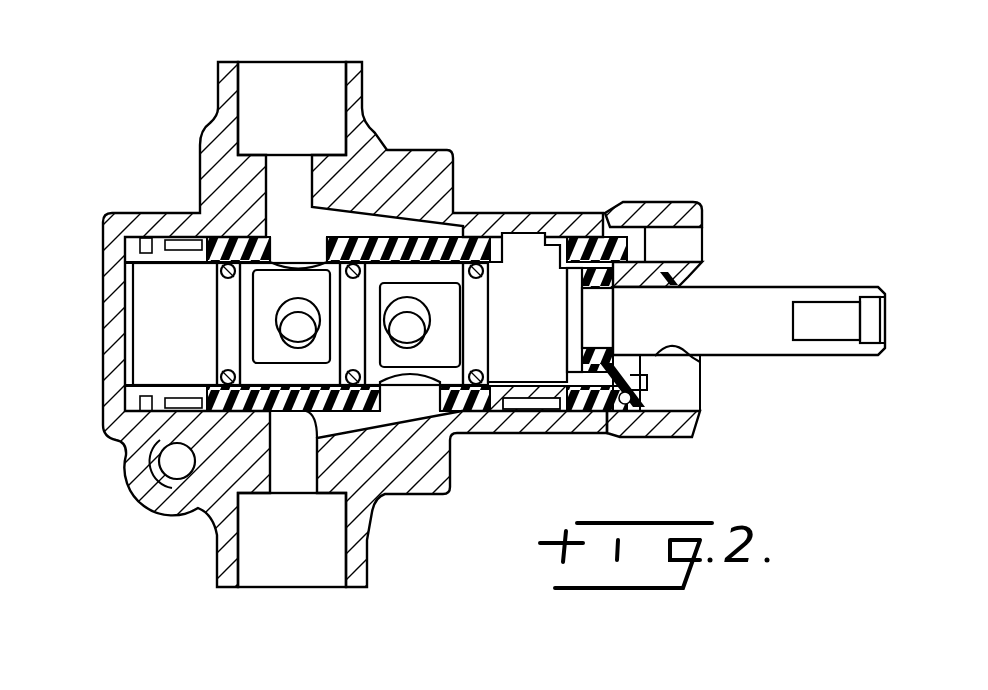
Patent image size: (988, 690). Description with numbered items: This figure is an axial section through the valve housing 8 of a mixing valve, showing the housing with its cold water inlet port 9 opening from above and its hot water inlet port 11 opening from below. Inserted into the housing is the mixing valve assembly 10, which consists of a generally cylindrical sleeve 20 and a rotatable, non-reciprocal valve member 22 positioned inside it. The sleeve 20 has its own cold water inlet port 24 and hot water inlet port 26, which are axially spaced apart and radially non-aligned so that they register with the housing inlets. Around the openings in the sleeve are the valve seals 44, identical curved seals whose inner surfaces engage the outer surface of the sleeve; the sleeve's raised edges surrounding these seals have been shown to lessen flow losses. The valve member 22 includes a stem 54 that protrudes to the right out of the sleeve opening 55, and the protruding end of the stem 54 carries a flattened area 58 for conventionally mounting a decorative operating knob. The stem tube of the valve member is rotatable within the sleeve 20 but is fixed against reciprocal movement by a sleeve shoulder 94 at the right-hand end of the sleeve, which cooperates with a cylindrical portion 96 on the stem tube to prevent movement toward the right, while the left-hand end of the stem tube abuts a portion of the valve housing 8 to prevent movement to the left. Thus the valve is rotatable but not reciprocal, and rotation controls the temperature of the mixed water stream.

The valve housing 8 is at (394, 150).
The cold water inlet port 9 is at (282, 73).
The mixing valve assembly 10 is at (768, 270).
The hot water inlet port 11 is at (318, 572).
The sleeve 20 is at (630, 223).
The valve member 22 is at (153, 330).
The cold water inlet port 24 is at (297, 247).
The hot water inlet port 26 is at (410, 398).
The valve seal 44 is at (423, 227).
The stem 54 is at (828, 357).
The sleeve opening 55 is at (696, 354).
The flattened area 58 is at (833, 308).
The sleeve shoulder 94 is at (565, 278).
The cylindrical portion 96 is at (606, 407).